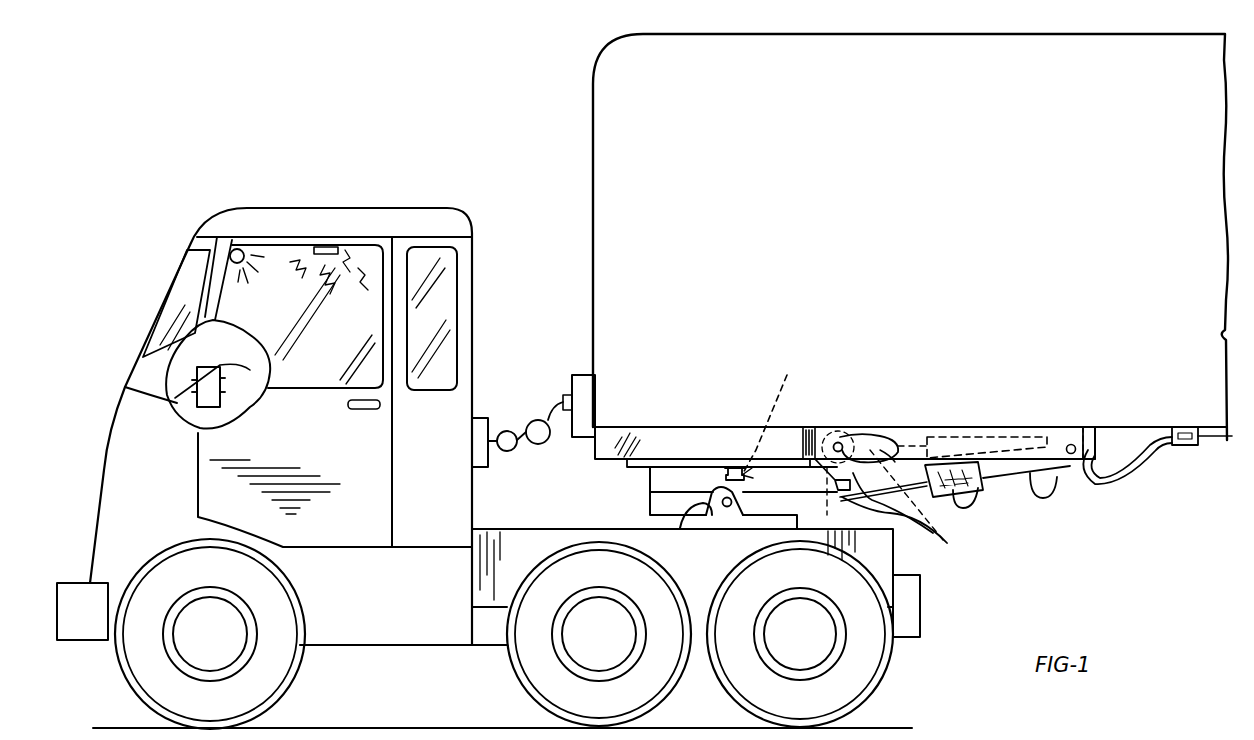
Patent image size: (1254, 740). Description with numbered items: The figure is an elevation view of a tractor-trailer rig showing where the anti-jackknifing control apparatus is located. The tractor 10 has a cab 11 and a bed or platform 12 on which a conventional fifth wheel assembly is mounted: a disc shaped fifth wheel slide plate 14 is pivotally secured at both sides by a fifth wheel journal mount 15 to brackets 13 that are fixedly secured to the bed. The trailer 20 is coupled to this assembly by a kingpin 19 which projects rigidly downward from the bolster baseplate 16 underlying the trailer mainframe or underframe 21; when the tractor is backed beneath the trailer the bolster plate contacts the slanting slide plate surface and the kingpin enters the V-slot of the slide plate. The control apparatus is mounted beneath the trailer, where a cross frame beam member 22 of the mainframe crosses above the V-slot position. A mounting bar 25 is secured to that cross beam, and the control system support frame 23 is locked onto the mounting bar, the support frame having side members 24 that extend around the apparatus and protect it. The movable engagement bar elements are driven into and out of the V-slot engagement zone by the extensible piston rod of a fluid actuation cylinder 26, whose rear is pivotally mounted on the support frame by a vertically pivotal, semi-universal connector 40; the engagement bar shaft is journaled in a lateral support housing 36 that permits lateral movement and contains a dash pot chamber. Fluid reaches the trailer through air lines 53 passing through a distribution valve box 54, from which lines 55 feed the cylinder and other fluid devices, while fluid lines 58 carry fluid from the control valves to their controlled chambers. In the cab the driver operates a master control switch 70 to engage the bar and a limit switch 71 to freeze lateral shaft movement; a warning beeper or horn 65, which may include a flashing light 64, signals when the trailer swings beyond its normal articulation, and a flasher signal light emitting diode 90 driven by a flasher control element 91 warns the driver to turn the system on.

The tractor 10 is at (452, 186).
The cab 11 is at (472, 322).
The bed or platform 12 is at (524, 528).
The brackets 13 is at (700, 520).
The fifth wheel slide plate 14 is at (650, 482).
The fifth wheel journal mount 15 is at (727, 508).
The bolster baseplate 16 is at (680, 465).
The kingpin 19 is at (784, 433).
The trailer 20 is at (1226, 438).
The mainframe or underframe 21 is at (736, 433).
The cross frame beam member 22 is at (822, 432).
The control system support frame 23 is at (920, 440).
The side members 24 is at (1098, 427).
The mounting bar 25 is at (834, 442).
The fluid actuation cylinder 26 is at (940, 540).
The lateral support housing 36 is at (1013, 478).
The vertically pivotal connector 40 is at (1063, 443).
The air lines 53 is at (520, 424).
The distribution valve box 54 is at (574, 376).
The fluid lines 55 is at (1137, 458).
The fluid lines 58 is at (872, 436).
The flashing light 64 is at (232, 248).
The warning beeper or horn 65 is at (324, 248).
The master control switch 70 is at (255, 352).
The limit switch 71 is at (240, 415).
The flasher signal light emitting diode 90 is at (195, 338).
The flasher control element 91 is at (143, 351).